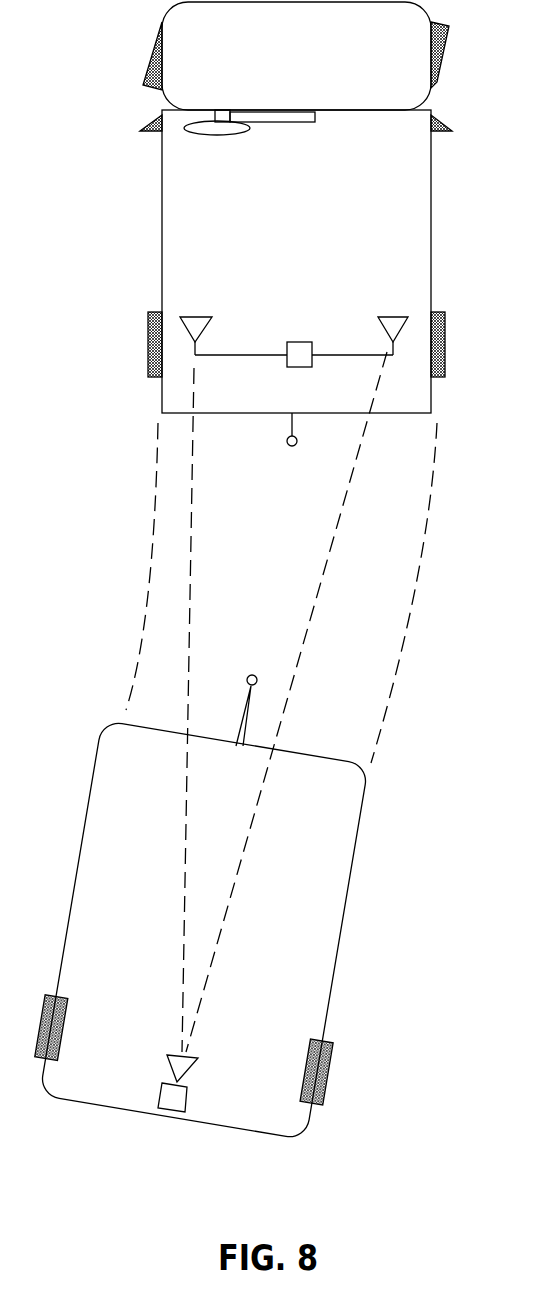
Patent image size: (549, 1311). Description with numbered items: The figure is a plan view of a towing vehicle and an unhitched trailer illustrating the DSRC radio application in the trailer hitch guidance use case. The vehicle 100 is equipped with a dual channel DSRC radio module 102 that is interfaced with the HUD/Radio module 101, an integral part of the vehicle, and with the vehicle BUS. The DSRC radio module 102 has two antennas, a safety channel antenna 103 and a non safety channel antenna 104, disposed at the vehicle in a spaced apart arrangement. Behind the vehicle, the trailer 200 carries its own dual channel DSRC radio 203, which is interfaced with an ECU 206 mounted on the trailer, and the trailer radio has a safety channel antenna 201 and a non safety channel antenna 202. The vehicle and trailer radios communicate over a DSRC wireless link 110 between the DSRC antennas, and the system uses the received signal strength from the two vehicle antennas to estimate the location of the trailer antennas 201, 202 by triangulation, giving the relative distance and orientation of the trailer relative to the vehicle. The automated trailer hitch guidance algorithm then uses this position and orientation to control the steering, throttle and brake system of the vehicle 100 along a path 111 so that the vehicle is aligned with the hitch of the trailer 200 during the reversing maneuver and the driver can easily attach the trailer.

The vehicle 100 is at (420, 125).
The HUD/Radio module 101 is at (310, 118).
The dual channel DSRC radio module 102 is at (297, 350).
The safety channel antenna 103 is at (388, 322).
The non safety channel antenna 104 is at (211, 318).
The DSRC wireless link 110 is at (342, 514).
The path of the vehicle trajectory 111 is at (443, 477).
The trailer 200 is at (122, 746).
The safety channel antenna 201 is at (210, 1058).
The non safety channel antenna 202 is at (183, 1062).
The dual channel DSRC radio 203 is at (121, 1092).
The ECU 206 is at (160, 1107).